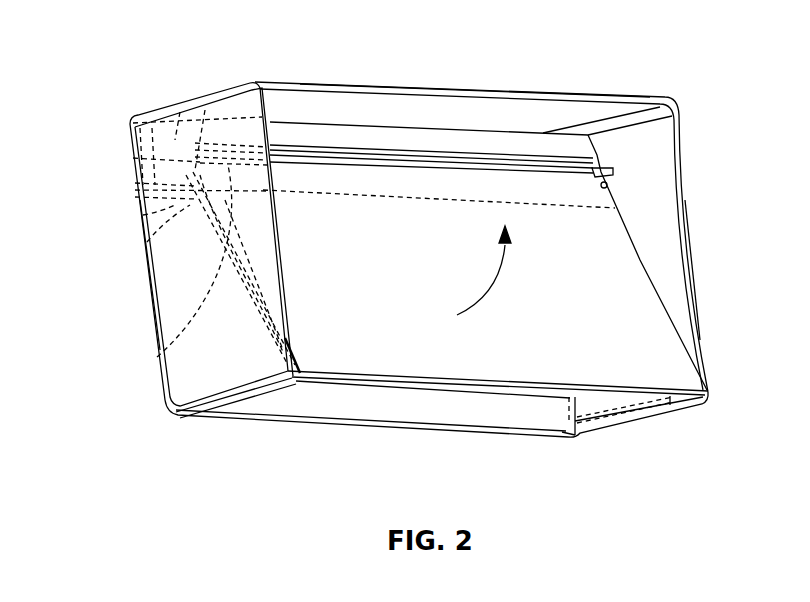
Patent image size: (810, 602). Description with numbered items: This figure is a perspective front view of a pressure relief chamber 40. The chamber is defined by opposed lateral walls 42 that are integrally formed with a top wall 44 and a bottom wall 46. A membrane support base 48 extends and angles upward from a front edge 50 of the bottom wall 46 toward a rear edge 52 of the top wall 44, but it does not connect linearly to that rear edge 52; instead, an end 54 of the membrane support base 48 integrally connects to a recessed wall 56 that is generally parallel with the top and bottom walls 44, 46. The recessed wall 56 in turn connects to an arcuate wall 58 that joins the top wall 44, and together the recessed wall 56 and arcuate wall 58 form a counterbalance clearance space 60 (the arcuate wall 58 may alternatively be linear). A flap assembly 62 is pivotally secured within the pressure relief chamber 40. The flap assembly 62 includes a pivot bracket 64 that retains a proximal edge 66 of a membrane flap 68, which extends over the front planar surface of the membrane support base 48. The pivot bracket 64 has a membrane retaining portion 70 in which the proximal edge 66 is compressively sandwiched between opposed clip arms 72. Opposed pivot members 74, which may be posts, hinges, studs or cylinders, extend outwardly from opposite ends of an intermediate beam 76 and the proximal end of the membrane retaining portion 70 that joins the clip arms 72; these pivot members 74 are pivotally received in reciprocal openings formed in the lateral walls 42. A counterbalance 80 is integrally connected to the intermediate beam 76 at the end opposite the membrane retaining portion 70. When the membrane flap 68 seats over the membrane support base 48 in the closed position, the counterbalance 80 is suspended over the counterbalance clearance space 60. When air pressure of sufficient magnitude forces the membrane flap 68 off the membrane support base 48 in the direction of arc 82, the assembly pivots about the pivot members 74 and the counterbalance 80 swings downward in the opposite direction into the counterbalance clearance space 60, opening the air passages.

The pressure relief chamber 40 is at (657, 150).
The lateral walls 42 is at (147, 300).
The top wall 44 is at (502, 90).
The bottom wall 46 is at (567, 438).
The membrane support base 48 is at (263, 347).
The front edge 50 is at (671, 405).
The rear edge 52 is at (131, 127).
The end 54 is at (143, 215).
The recessed wall 56 is at (133, 190).
The arcuate wall 58 is at (173, 135).
The counterbalance clearance space 60 is at (200, 175).
The flap assembly 62 is at (613, 233).
The pivot bracket 64 is at (590, 135).
The proximal edge 66 is at (612, 213).
The membrane flap 68 is at (643, 338).
The membrane retaining portion 70 is at (403, 173).
The clip arms 72 is at (147, 242).
The pivot members 74 is at (133, 155).
The intermediate beam 76 is at (608, 160).
The counterbalance 80 is at (457, 133).
The arc 82 is at (502, 280).